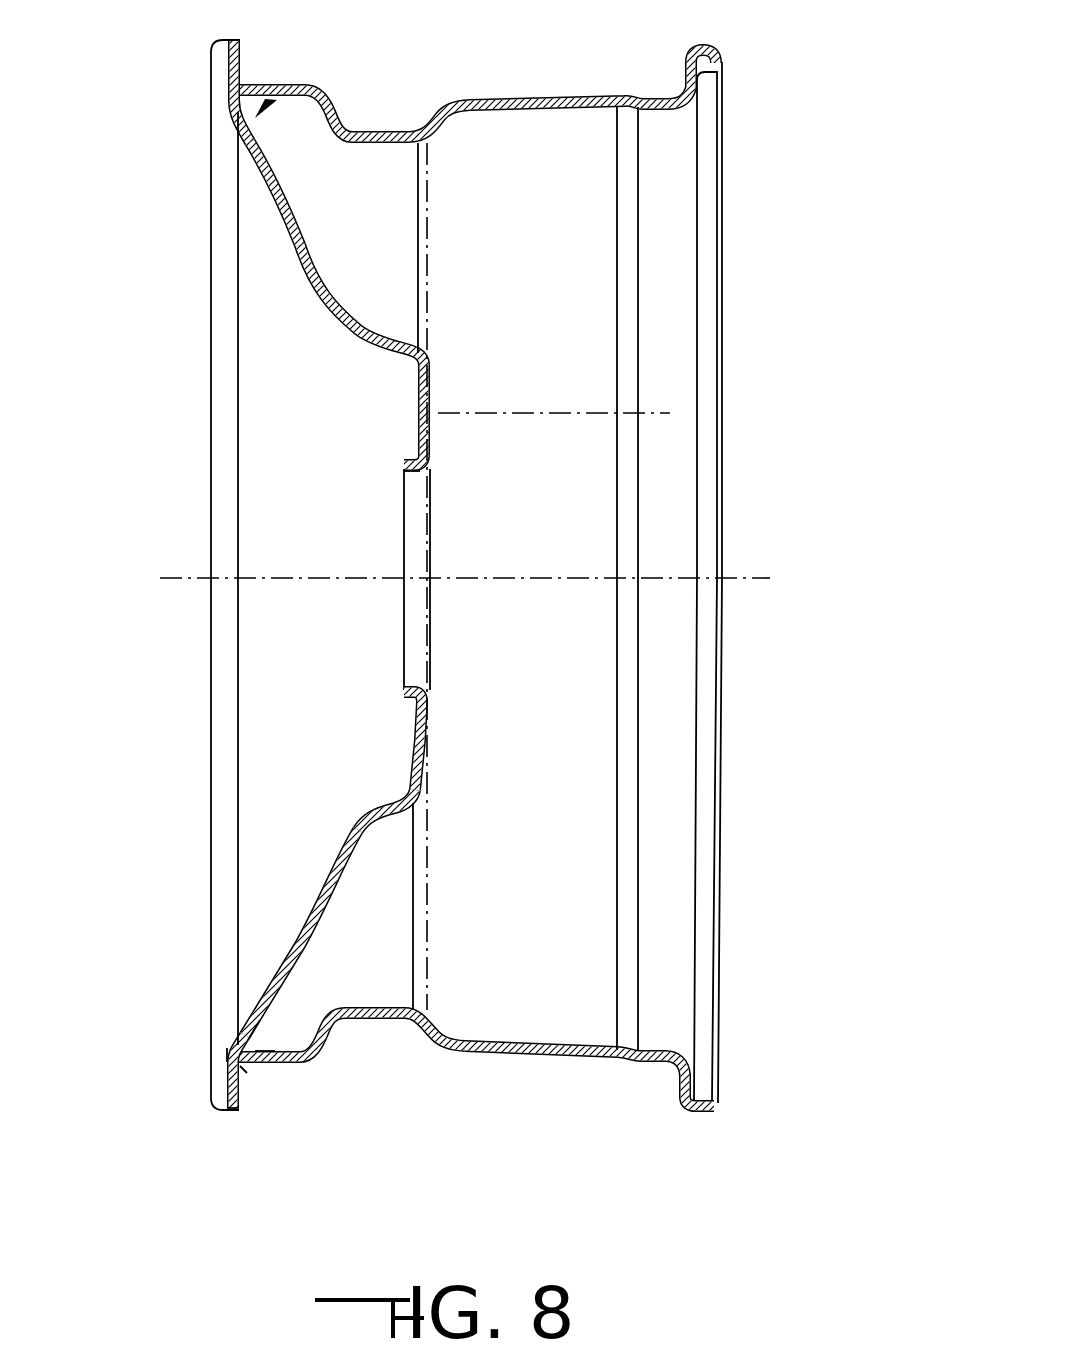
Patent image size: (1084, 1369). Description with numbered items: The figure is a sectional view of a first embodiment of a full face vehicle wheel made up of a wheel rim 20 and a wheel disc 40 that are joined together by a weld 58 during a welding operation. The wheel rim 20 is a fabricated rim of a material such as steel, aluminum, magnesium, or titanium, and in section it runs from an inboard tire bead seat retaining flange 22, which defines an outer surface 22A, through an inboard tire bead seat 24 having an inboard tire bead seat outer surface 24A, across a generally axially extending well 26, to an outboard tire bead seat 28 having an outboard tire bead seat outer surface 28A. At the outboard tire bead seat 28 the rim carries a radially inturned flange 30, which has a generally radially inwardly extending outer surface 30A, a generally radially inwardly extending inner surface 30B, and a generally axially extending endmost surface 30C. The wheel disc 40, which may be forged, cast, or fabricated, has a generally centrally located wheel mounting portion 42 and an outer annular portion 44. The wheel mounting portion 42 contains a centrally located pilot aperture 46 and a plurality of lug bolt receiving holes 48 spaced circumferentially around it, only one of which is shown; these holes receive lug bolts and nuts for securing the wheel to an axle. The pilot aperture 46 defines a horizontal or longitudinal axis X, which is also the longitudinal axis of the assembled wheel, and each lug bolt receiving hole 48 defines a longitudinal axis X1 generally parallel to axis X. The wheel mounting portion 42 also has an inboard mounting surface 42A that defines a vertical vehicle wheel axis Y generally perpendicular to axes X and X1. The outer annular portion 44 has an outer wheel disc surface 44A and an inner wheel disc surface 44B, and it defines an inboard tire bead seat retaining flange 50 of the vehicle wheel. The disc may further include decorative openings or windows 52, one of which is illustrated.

The wheel rim 20 is at (530, 1024).
The inboard tire bead seat retaining flange 22 is at (683, 1112).
The outer surface of inboard tire bead seat retaining flange 22A is at (722, 70).
The inboard tire bead seat 24 is at (640, 1063).
The inboard tire bead seat outer surface 24A is at (663, 98).
The well 26 is at (393, 1020).
The outboard tire bead seat 28 is at (263, 1064).
The outboard tire bead seat outer surface 28A is at (256, 83).
The radially inturned flange 30 is at (250, 136).
The outer surface of flange 30A is at (223, 1052).
The inner surface of flange 30B is at (263, 1050).
The endmost surface of flange 30C is at (250, 1047).
The wheel disc 40 is at (362, 804).
The wheel mounting portion 42 is at (412, 738).
The inboard mounting surface 42A is at (430, 457).
The outer annular portion 44 is at (222, 1043).
The outer wheel disc surface 44A is at (258, 150).
The inner wheel disc surface 44B is at (270, 150).
The pilot aperture 46 is at (420, 688).
The lug bolt receiving hole 48 is at (415, 415).
The inboard tire bead seat retaining flange 50 is at (243, 1090).
The decorative opening 52 is at (318, 910).
The weld 58 is at (247, 1073).
The pilot aperture axis X is at (537, 578).
The lug bolt receiving hole axis X1 is at (548, 412).
The vertical vehicle wheel axis Y is at (438, 268).